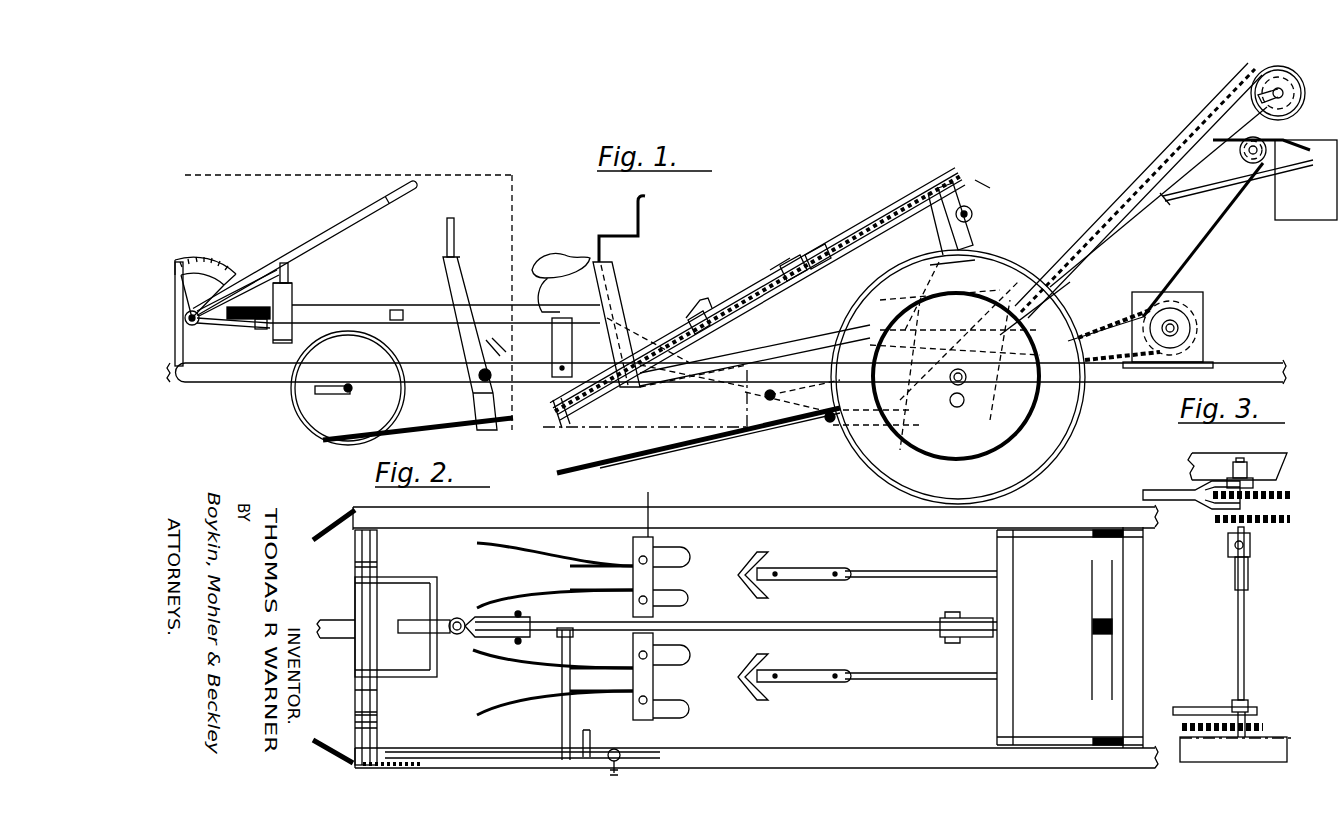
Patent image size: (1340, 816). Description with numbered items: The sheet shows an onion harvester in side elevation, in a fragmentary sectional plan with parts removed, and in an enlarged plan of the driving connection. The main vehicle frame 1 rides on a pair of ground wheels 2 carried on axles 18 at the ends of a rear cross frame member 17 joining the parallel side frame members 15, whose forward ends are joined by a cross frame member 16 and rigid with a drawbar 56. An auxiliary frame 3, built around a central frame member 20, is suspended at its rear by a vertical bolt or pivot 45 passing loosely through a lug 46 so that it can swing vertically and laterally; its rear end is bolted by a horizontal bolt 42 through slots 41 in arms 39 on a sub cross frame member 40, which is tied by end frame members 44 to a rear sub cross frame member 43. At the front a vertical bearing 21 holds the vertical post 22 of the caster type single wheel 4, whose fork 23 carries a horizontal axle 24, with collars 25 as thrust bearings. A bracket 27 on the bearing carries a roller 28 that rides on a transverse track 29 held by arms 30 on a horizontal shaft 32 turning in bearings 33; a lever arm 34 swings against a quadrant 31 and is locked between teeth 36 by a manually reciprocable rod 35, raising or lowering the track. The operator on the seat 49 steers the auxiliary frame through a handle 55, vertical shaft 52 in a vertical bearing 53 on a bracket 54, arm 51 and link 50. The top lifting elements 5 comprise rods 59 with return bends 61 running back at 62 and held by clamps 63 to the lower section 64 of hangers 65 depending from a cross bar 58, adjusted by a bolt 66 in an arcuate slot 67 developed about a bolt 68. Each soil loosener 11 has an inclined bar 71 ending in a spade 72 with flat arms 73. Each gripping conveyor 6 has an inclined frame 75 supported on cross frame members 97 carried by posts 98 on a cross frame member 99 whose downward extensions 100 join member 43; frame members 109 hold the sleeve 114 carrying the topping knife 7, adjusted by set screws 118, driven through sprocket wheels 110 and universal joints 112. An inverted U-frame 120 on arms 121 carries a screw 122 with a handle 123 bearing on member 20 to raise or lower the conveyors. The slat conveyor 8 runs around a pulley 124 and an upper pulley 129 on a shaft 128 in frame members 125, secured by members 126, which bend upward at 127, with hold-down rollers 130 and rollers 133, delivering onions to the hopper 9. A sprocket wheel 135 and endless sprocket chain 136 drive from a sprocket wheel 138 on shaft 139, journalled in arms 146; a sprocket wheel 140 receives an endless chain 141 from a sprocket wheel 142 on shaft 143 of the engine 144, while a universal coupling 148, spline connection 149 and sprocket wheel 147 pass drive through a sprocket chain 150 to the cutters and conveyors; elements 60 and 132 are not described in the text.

In FIG. 1, the main vehicle frame 1 is at (263, 386).
In FIG. 1, the ground wheels 2 is at (178, 168).
In FIG. 1, the auxiliary frame 3 is at (487, 303).
In FIG. 1, the caster type single wheel 4 is at (374, 338).
In FIG. 2, the caster type single wheel 4 is at (545, 640).
In FIG. 1, the top lifting elements 5 is at (410, 418).
In FIG. 2, the top lifting elements 5 is at (598, 591).
In FIG. 1, the conveyor 6 is at (745, 292).
In FIG. 1, the topping knife 7 is at (900, 250).
In FIG. 1, the slat conveyor 8 is at (1170, 170).
In FIG. 1, the collecting receptacle or hopper 9 is at (1305, 208).
In FIG. 1, the soil loosener 11 is at (630, 440).
In FIG. 2, the soil loosener 11 is at (820, 568).
In FIG. 1, the side frame members 15 is at (427, 360).
In FIG. 2, the side frame members 15 is at (930, 528).
In FIG. 3, the side frame members 15 is at (1212, 455).
In FIG. 1, the cross frame member 16 is at (218, 384).
In FIG. 2, the cross frame member 16 is at (380, 552).
In FIG. 1, the cross frame member 17 is at (958, 377).
In FIG. 2, the cross frame member 17 is at (1150, 602).
In FIG. 1, the axles 18 is at (1010, 402).
In FIG. 1, the central frame member 20 is at (583, 316).
In FIG. 2, the central frame member 20 is at (710, 626).
In FIG. 1, the vertical bearing 21 is at (292, 303).
In FIG. 2, the vertical bearing 21 is at (459, 617).
In FIG. 1, the vertical post 22 is at (289, 268).
In FIG. 2, the vertical post 22 is at (461, 636).
In FIG. 1, the fork 23 is at (318, 393).
In FIG. 1, the horizontal axle 24 is at (354, 389).
In FIG. 1, the collars 25 is at (292, 339).
In FIG. 1, the bracket 27 is at (272, 270).
In FIG. 1, the roller 28 is at (262, 331).
In FIG. 2, the roller 28 is at (410, 620).
In FIG. 1, the track 29 is at (244, 322).
In FIG. 2, the track 29 is at (430, 592).
In FIG. 1, the arms 30 is at (233, 330).
In FIG. 2, the arms 30 is at (395, 578).
In FIG. 1, the quadrant 31 is at (232, 280).
In FIG. 2, the quadrant 31 is at (385, 760).
In FIG. 1, the horizontal shaft 32 is at (186, 321).
In FIG. 2, the horizontal shaft 32 is at (360, 645).
In FIG. 1, the bearings 33 is at (200, 353).
In FIG. 2, the bearings 33 is at (360, 575).
In FIG. 1, the lever arm 34 is at (313, 240).
In FIG. 2, the manually reciprocable rod 35 is at (475, 752).
In FIG. 1, the teeth 36 is at (190, 258).
In FIG. 1, the arms 39 is at (833, 395).
In FIG. 2, the arms 39 is at (967, 631).
In FIG. 1, the sub cross frame member 40 is at (838, 418).
In FIG. 2, the sub cross frame member 40 is at (1013, 620).
In FIG. 1, the slots 41 is at (792, 398).
In FIG. 1, the horizontal bolt 42 is at (765, 395).
In FIG. 2, the horizontal bolt 42 is at (952, 644).
In FIG. 1, the sub cross frame member 43 is at (922, 450).
In FIG. 2, the sub cross frame member 43 is at (1092, 680).
In FIG. 1, the end frame members 44 is at (845, 440).
In FIG. 2, the end frame members 44 is at (1070, 637).
In FIG. 1, the bolt or pivot 45 is at (895, 425).
In FIG. 2, the bolt or pivot 45 is at (1093, 638).
In FIG. 1, the lug 46 is at (905, 405).
In FIG. 2, the lug 46 is at (1100, 619).
In FIG. 1, the seat 49 is at (546, 264).
In FIG. 1, the link 50 is at (400, 320).
In FIG. 2, the link 50 is at (562, 721).
In FIG. 2, the arm 51 is at (604, 733).
In FIG. 1, the vertical shaft 52 is at (445, 273).
In FIG. 1, the vertical bearing 53 is at (463, 268).
In FIG. 2, the vertical bearing 53 is at (618, 750).
In FIG. 1, the bracket 54 is at (477, 300).
In FIG. 2, the bracket 54 is at (620, 694).
In FIG. 1, the handle 55 is at (456, 223).
In FIG. 2, the handle 55 is at (622, 765).
In FIG. 1, the drawbar 56 is at (178, 388).
In FIG. 2, the drawbar 56 is at (352, 538).
In FIG. 2, the cross bar 58 is at (633, 576).
In FIG. 2, the rods 59 is at (568, 563).
In FIG. 2, the spring arm 60 is at (546, 633).
In FIG. 2, the return bends 61 is at (680, 630).
In FIG. 2, the slanting portion 62 is at (636, 603).
In FIG. 1, the clamp 63 is at (478, 426).
In FIG. 2, the clamp 63 is at (683, 580).
In FIG. 2, the lower section 64 is at (658, 511).
In FIG. 1, the hanger 65 is at (487, 358).
In FIG. 1, the bolt 66 is at (478, 375).
In FIG. 2, the bolt 66 is at (682, 730).
In FIG. 1, the arcuate slot 67 is at (497, 364).
In FIG. 1, the bolt 68 is at (476, 400).
In FIG. 1, the bar 71 is at (718, 448).
In FIG. 2, the bar 71 is at (893, 572).
In FIG. 1, the spade 72 is at (585, 455).
In FIG. 2, the spade 72 is at (724, 637).
In FIG. 2, the arms 73 is at (751, 631).
In FIG. 1, the frame 75 is at (845, 240).
In FIG. 1, the cross frame members 97 is at (925, 196).
In FIG. 1, the posts 98 is at (957, 200).
In FIG. 1, the cross frame member 99 is at (1010, 272).
In FIG. 1, the downward extensions 100 is at (860, 306).
In FIG. 1, the frame members 109 is at (902, 288).
In FIG. 1, the sprocket wheels 110 is at (975, 241).
In FIG. 1, the universal joints 112 is at (972, 213).
In FIG. 1, the sleeve 114 is at (925, 245).
In FIG. 1, the set screws 118 is at (935, 200).
In FIG. 1, the inverted U-frame 120 is at (630, 300).
In FIG. 1, the arms 121 is at (641, 388).
In FIG. 1, the screw 122 is at (603, 261).
In FIG. 1, the handle 123 is at (646, 220).
In FIG. 1, the pulley 124 is at (830, 336).
In FIG. 1, the frame members 125 is at (755, 347).
In FIG. 1, the members 126 is at (1030, 400).
In FIG. 1, the upwardly extending portion 127 is at (1095, 262).
In FIG. 1, the shaft 128 is at (1284, 96).
In FIG. 1, the upper pulley 129 is at (1300, 86).
In FIG. 1, the hold-down rollers 130 is at (1035, 260).
In FIG. 1, the bracket 132 is at (1262, 120).
In FIG. 1, the rollers 133 is at (1258, 165).
In FIG. 1, the sprocket wheel 135 is at (1272, 68).
In FIG. 1, the endless sprocket chain 136 is at (1215, 215).
In FIG. 3, the endless sprocket chain 136 is at (1294, 496).
In FIG. 1, the sprocket wheel 138 is at (1122, 348).
In FIG. 3, the sprocket wheel 138 is at (1250, 476).
In FIG. 1, the shaft 139 is at (1090, 368).
In FIG. 3, the shaft 139 is at (1225, 530).
In FIG. 3, the sprocket wheel 140 is at (1270, 518).
In FIG. 1, the endless chain 141 is at (1112, 298).
In FIG. 3, the endless chain 141 is at (1282, 528).
In FIG. 1, the sprocket wheel 142 is at (1200, 340).
In FIG. 1, the shaft 143 is at (1192, 323).
In FIG. 1, the engine 144 is at (1200, 290).
In FIG. 1, the arms 146 is at (985, 372).
In FIG. 3, the arms 146 is at (1162, 485).
In FIG. 1, the sprocket wheel 147 is at (1108, 318).
In FIG. 3, the sprocket wheel 147 is at (1265, 724).
In FIG. 3, the universal coupling 148 is at (1228, 548).
In FIG. 3, the spline connection 149 is at (1250, 586).
In FIG. 3, the sprocket chain 150 is at (1202, 749).